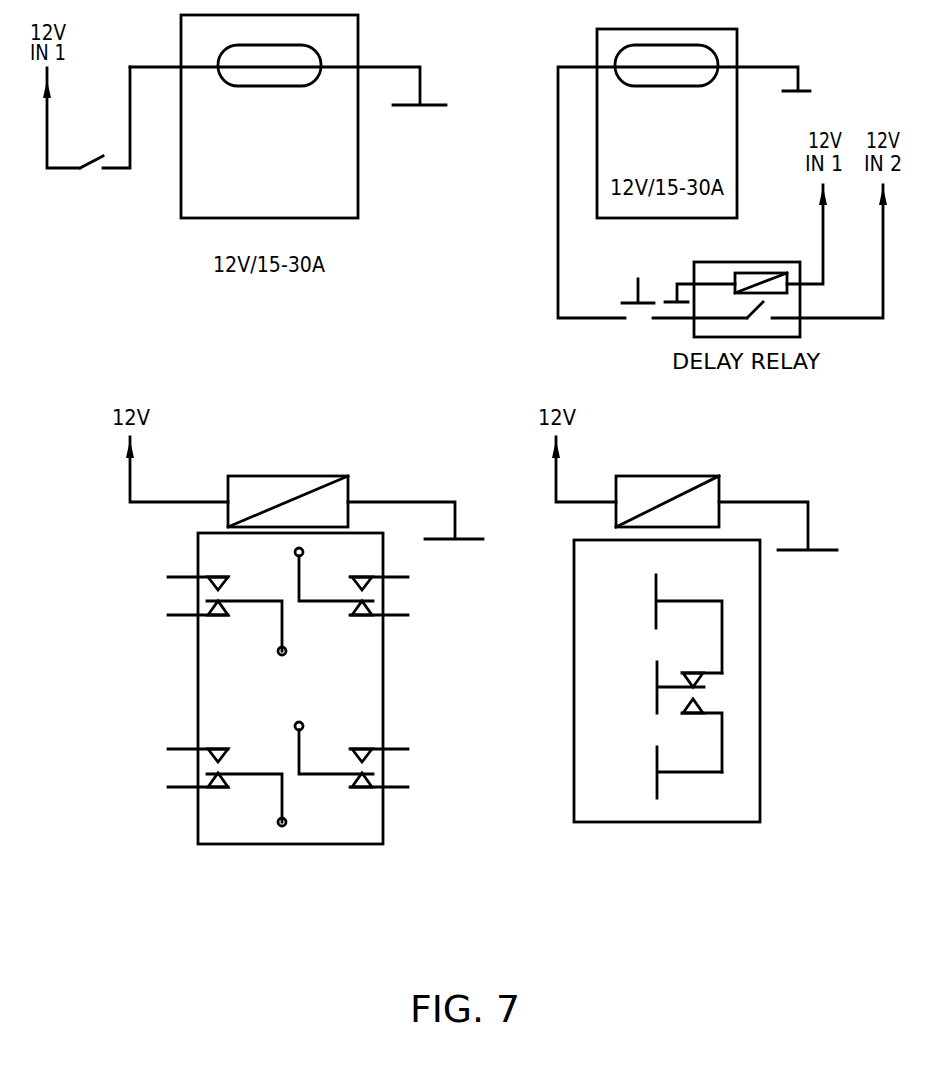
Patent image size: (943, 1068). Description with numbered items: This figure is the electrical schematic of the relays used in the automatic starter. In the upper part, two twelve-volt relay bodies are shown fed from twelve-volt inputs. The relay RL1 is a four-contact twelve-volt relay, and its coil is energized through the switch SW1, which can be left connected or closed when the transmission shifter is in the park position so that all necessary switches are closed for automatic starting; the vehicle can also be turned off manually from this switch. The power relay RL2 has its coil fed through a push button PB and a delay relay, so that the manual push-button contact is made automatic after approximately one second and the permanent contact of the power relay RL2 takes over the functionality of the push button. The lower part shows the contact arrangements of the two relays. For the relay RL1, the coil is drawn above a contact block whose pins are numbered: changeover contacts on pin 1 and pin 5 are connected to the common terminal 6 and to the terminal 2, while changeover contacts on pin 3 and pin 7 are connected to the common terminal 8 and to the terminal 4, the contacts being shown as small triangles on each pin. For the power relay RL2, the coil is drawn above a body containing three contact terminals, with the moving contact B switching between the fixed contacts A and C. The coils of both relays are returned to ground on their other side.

The relay RL1 contact pin 1 is at (190, 581).
The relay RL1 terminal 2 is at (294, 653).
The relay RL1 contact pin 3 is at (189, 753).
The relay RL1 terminal 4 is at (294, 823).
The relay RL1 contact pin 5 is at (389, 581).
The relay RL1 terminal 6 is at (334, 573).
The relay RL1 contact pin 7 is at (389, 753).
The relay RL1 terminal 8 is at (334, 745).
The relay RL2 contact A is at (676, 624).
The relay RL2 contact B is at (677, 717).
The relay RL2 contact C is at (677, 772).
The relay RL1 is at (282, 429).
The power relay RL2 is at (667, 425).
The switch SW1 is at (86, 117).
The push button PB is at (678, 276).